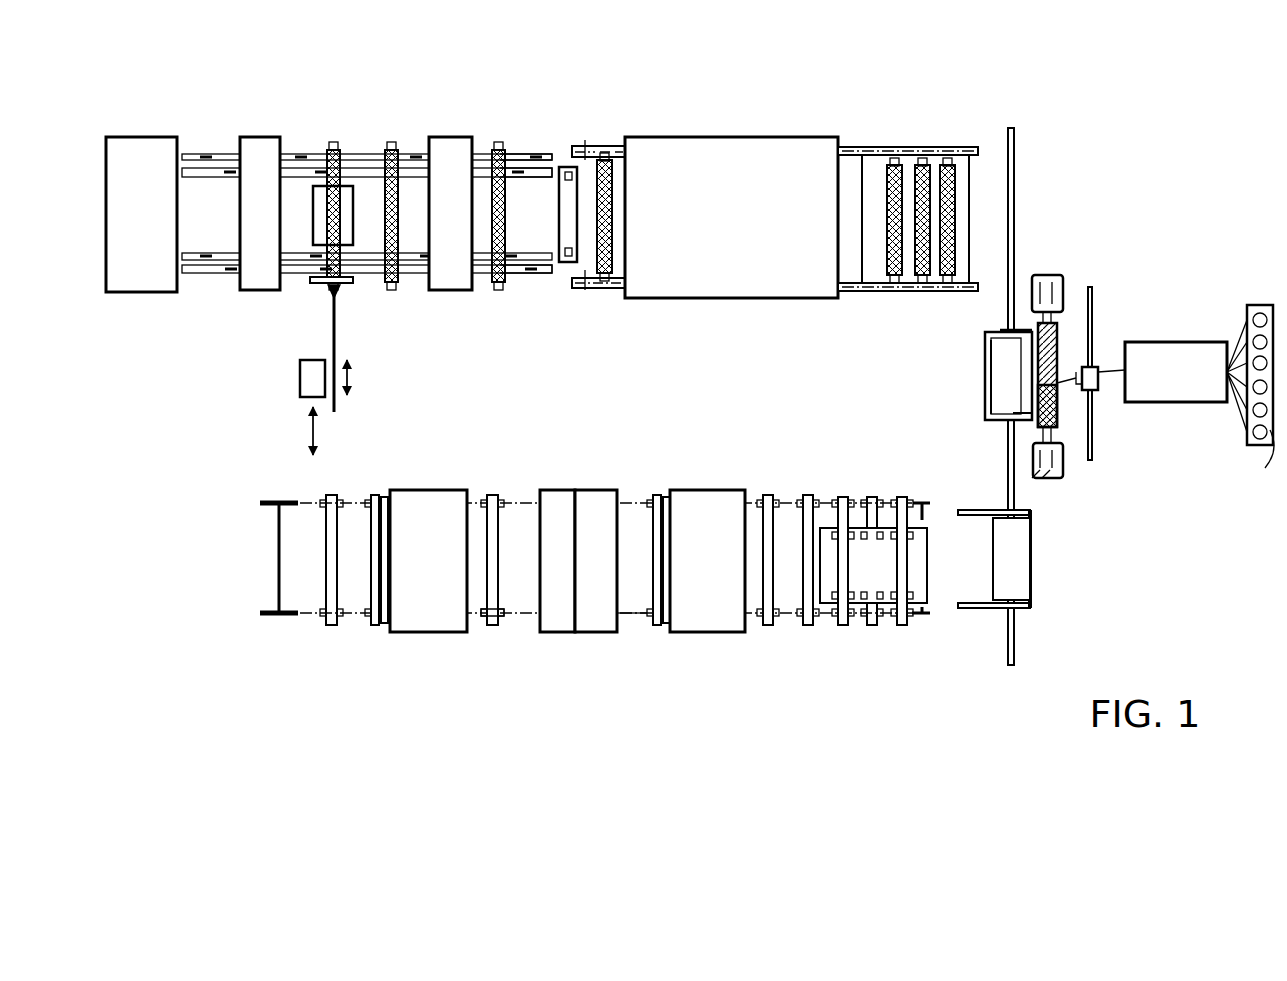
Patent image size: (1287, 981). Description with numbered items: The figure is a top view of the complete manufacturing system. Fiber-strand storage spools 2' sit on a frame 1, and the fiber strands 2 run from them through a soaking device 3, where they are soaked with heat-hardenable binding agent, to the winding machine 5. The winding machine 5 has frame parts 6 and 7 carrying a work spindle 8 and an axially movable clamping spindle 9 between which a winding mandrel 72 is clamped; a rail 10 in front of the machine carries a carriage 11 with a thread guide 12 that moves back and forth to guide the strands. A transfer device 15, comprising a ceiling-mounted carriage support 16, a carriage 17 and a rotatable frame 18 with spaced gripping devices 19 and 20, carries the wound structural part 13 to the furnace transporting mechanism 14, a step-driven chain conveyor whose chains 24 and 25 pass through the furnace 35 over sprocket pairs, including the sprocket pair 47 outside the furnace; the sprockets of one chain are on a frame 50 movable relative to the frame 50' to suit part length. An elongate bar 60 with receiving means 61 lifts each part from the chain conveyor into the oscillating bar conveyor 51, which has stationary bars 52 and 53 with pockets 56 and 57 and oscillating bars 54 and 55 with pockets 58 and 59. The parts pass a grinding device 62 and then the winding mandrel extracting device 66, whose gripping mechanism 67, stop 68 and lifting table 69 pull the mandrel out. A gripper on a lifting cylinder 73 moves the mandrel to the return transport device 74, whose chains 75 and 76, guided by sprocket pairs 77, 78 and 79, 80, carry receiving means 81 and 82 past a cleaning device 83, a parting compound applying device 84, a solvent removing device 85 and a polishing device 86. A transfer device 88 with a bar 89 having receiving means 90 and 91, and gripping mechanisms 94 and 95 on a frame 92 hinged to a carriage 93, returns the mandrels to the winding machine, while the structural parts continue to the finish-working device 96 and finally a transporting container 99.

The frame 1 is at (1258, 305).
The fiber strands 2 is at (1175, 351).
The fiber-strand storage spools 2' is at (1262, 465).
The soaking device 3 is at (1176, 372).
The winding machine 5 is at (1078, 255).
The frame part 6 is at (1063, 460).
The frame part 7 is at (1048, 275).
The work spindle 8 is at (1045, 478).
The clamping spindle 9 is at (1060, 330).
The rail 10 is at (1092, 297).
The carriage 11 is at (1098, 382).
The thread guide 12 is at (1092, 425).
The structural part 13 is at (610, 165).
The furnace transporting mechanism 14 is at (928, 135).
The transfer device 15 is at (960, 380).
The carriage support 16 is at (1014, 142).
The carriage 17 is at (990, 360).
The frame 18 is at (990, 400).
The gripping device 19 is at (1012, 418).
The gripping device 20 is at (1000, 330).
The conveyor chain 24 is at (880, 292).
The conveyor chain 25 is at (900, 150).
The furnace 35 is at (731, 217).
The sixth sprocket pair 47 is at (582, 290).
The frame 50 is at (923, 323).
The frame 50' is at (933, 168).
The oscillating bar conveyor 51 is at (437, 100).
The stationary bar 52 is at (188, 273).
The stationary bar 53 is at (194, 153).
The oscillating bar 54 is at (215, 262).
The oscillating bar 55 is at (215, 168).
The receiving means 56 is at (532, 275).
The receiving means 57 is at (523, 155).
The receiving means 58 is at (498, 283).
The receiving means 59 is at (530, 168).
The elongate bar 60 is at (568, 262).
The receiving means 61 is at (582, 165).
The grinding device 62 is at (450, 270).
The winding mandrel extracting device 66 is at (343, 130).
The gripping mechanism 67 is at (340, 292).
The stop 68 is at (312, 284).
The lifting table 69 is at (318, 186).
The winding mandrel 72 is at (393, 288).
The lifting cylinder 73 is at (300, 378).
The winding mandrel return transport device 74 is at (492, 690).
The conveyor chain 75 is at (646, 614).
The conveyor chain 76 is at (647, 503).
The sprocket pair 77 is at (283, 616).
The sprocket pair 78 is at (278, 500).
The sprocket pair 79 is at (922, 503).
The sprocket pair 80 is at (918, 615).
The receiving means 81 is at (494, 623).
The receiving means 82 is at (494, 498).
The cleaning device 83 is at (416, 561).
The parting compound applying device 84 is at (558, 500).
The solvent removing device 85 is at (598, 497).
The polishing device 86 is at (707, 561).
The transfer device 88 is at (828, 650).
The bar 89 is at (915, 565).
The receiving means 90 is at (843, 520).
The receiving means 91 is at (845, 622).
The frame 92 is at (1032, 555).
The carriage 93 is at (1020, 592).
The gripping mechanism 94 is at (975, 510).
The gripping mechanism 95 is at (968, 609).
The finish-working device 96 is at (265, 137).
The transporting container 99 is at (141, 214).